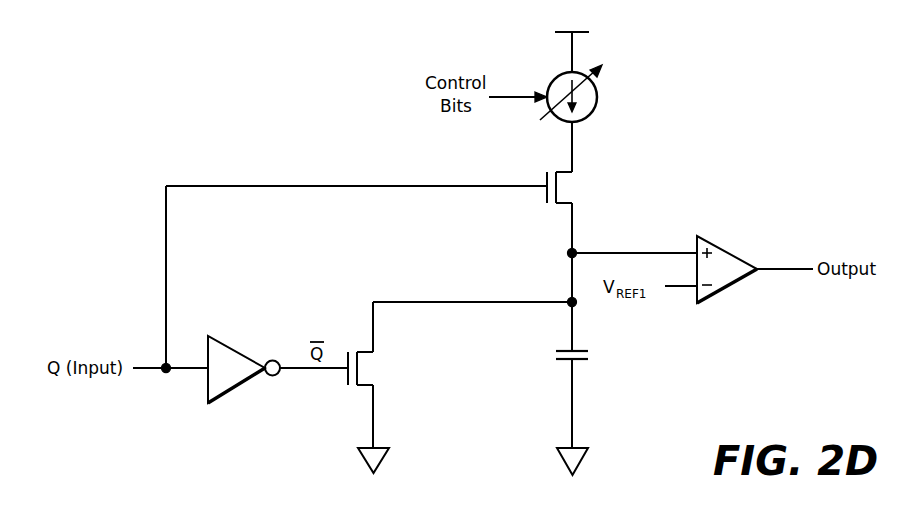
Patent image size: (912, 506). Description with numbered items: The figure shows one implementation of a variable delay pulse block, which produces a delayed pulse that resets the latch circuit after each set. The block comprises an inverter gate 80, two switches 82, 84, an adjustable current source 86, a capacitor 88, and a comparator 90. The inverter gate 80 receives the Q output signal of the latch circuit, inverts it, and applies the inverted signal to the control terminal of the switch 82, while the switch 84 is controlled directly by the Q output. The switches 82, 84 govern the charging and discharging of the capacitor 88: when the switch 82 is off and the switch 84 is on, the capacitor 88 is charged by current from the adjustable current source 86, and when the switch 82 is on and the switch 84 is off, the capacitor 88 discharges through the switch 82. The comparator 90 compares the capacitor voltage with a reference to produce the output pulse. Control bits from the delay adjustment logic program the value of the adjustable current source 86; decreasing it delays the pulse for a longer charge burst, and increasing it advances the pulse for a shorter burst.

The inverter gate 80 is at (243, 348).
The switch 82 is at (360, 390).
The switch 84 is at (561, 206).
The adjustable current source 86 is at (599, 100).
The capacitor 88 is at (558, 364).
The comparator 90 is at (711, 240).